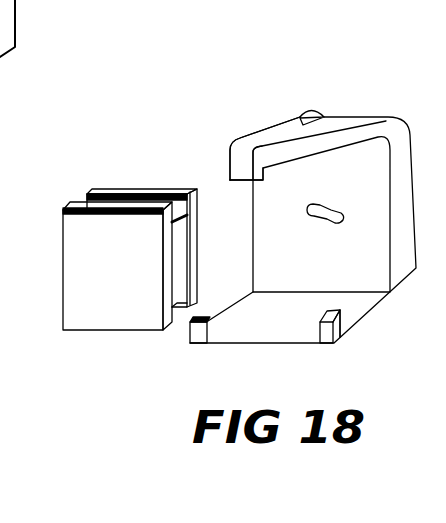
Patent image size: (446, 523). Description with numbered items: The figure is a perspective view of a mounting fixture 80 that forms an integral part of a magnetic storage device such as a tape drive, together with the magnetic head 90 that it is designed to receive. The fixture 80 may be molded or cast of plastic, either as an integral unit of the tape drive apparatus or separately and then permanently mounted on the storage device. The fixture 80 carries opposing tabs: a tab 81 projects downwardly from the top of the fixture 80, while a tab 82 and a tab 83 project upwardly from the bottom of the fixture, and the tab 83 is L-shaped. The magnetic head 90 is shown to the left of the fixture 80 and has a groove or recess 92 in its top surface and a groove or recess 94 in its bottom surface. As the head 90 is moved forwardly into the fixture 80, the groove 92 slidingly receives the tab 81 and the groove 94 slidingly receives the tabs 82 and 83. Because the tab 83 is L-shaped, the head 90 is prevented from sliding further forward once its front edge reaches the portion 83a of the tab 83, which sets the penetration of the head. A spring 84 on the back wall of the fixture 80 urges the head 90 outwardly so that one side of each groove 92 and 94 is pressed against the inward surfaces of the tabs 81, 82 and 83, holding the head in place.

The mounting fixture 80 is at (421, 171).
The tab 81 is at (245, 155).
The tab 82 is at (194, 340).
The tab 83 is at (323, 337).
The portion of tab 83a is at (341, 327).
The spring 84 is at (330, 207).
The magnetic head 90 is at (62, 255).
The groove 92 is at (172, 200).
The groove 94 is at (179, 313).